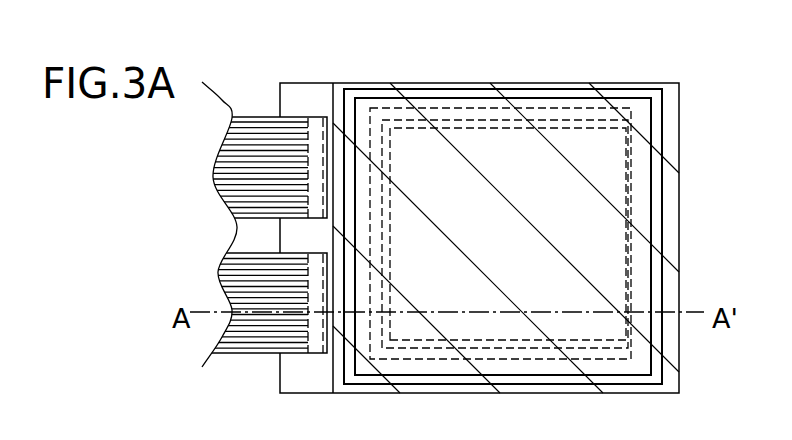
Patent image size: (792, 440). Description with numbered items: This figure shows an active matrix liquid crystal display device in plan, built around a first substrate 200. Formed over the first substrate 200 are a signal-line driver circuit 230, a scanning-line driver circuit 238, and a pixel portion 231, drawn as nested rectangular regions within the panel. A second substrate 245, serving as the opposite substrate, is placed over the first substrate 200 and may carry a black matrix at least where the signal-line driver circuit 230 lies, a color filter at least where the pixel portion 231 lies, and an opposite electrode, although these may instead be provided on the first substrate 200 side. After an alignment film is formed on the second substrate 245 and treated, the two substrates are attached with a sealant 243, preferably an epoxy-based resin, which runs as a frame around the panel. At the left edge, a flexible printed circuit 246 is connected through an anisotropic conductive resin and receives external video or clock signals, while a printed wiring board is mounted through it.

The first substrate 200 is at (312, 100).
The signal-line driver circuit 230 is at (380, 118).
The pixel portion 231 is at (617, 226).
The scanning-line driver circuit 238 is at (622, 110).
The sealant 243 is at (660, 133).
The second substrate 245 is at (334, 83).
The flexible printed circuit 246 is at (245, 353).